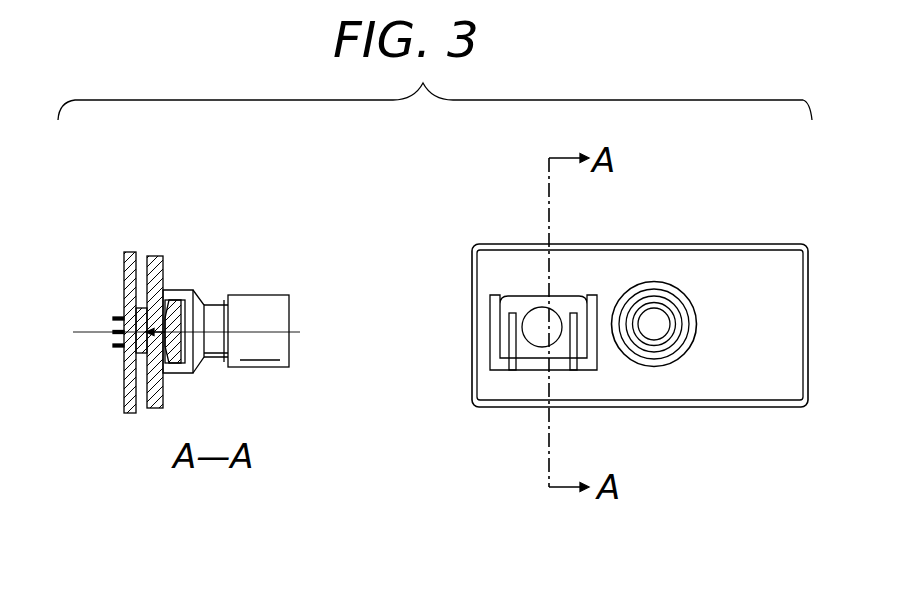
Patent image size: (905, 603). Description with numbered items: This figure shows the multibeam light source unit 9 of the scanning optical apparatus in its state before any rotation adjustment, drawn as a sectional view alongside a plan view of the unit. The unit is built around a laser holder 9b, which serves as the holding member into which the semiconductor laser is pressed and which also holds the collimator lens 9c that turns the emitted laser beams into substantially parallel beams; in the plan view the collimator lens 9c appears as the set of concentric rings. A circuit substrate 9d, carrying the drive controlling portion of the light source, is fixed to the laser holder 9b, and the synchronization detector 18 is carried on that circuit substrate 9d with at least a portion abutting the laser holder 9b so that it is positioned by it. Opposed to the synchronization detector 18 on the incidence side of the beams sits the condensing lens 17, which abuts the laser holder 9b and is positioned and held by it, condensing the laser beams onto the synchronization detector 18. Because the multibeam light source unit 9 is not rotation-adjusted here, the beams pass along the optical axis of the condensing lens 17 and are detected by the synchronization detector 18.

The multibeam light source unit 9 is at (733, 237).
The laser holder 9b is at (160, 256).
The collimator lens 9c is at (660, 370).
The circuit substrate 9d is at (128, 252).
The condensing lens 17 is at (193, 300).
The synchronization detector 18 is at (114, 318).